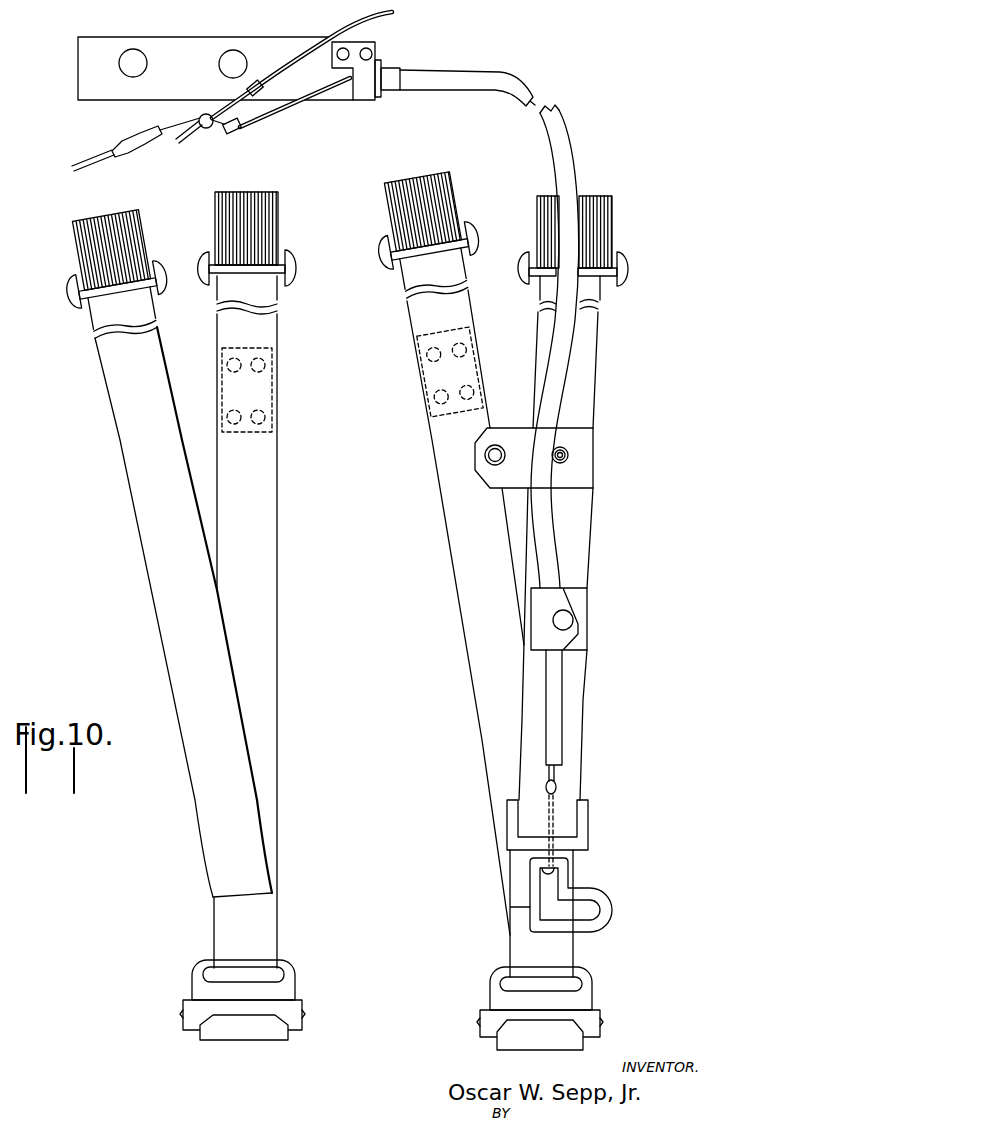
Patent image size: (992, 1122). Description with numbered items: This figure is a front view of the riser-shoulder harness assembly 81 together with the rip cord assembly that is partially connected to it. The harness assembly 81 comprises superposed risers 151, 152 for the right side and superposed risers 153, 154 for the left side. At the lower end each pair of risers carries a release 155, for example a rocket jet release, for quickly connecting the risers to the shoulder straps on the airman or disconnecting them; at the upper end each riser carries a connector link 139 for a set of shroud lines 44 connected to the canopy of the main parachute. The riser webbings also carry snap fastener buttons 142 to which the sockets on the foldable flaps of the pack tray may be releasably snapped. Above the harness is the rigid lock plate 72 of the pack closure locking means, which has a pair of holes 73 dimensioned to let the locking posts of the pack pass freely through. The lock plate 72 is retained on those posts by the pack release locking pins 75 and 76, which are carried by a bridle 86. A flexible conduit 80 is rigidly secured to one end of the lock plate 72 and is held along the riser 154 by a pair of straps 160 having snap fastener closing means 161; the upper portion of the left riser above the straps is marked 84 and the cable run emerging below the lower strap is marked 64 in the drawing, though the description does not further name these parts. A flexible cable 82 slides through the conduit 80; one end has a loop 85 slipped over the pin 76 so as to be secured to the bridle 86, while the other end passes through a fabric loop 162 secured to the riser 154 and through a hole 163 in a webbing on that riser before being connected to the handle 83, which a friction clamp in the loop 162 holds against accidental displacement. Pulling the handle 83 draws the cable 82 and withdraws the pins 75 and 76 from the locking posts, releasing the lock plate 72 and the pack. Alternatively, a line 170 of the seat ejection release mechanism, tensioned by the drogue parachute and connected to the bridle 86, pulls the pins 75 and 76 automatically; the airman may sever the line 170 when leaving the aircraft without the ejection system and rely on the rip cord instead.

The lock plate 72 is at (90, 62).
The holes 73 is at (233, 58).
The bridle 86 is at (258, 80).
The line 170 is at (383, 28).
The flexible cable 82 is at (281, 113).
The pack release locking pin 75 is at (80, 165).
The pack release locking pin 76 is at (183, 144).
The loop 85 is at (213, 133).
The flexible conduit 80 is at (568, 138).
The shroud lines 44 is at (80, 245).
The connector link 139 is at (78, 297).
The snap fastener buttons 142 is at (262, 418).
The upper leg 84 is at (583, 368).
The riser 153 is at (455, 523).
The riser-shoulder harness assembly 81 is at (587, 732).
The riser 154 is at (585, 683).
The straps 160 is at (583, 472).
The snap fastener closing means 161 is at (503, 453).
The riser 151 is at (266, 568).
The riser 152 is at (160, 599).
The rod 64 is at (568, 743).
The hole 163 is at (558, 788).
The fabric loop 162 is at (588, 827).
The handle 83 is at (613, 920).
The release 155 is at (220, 1033).